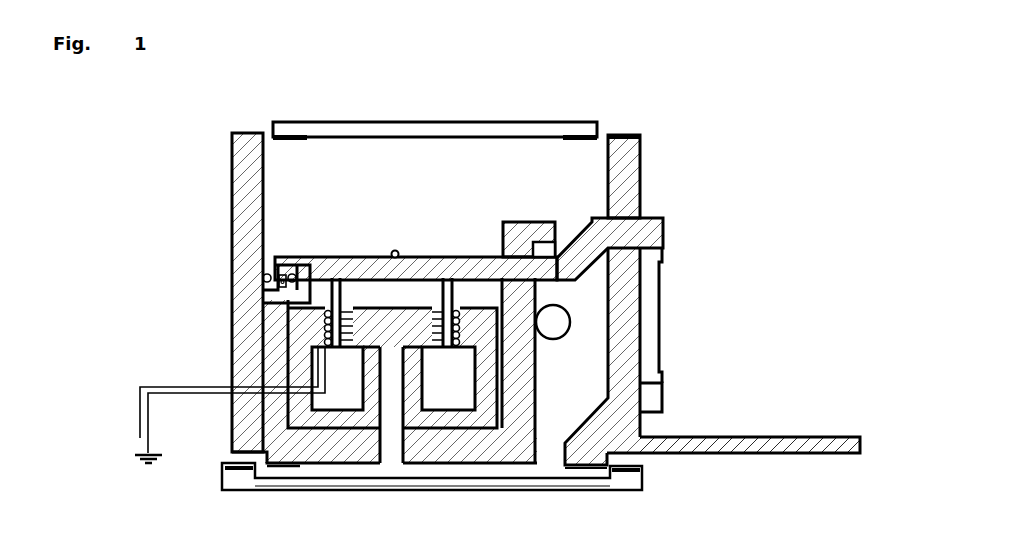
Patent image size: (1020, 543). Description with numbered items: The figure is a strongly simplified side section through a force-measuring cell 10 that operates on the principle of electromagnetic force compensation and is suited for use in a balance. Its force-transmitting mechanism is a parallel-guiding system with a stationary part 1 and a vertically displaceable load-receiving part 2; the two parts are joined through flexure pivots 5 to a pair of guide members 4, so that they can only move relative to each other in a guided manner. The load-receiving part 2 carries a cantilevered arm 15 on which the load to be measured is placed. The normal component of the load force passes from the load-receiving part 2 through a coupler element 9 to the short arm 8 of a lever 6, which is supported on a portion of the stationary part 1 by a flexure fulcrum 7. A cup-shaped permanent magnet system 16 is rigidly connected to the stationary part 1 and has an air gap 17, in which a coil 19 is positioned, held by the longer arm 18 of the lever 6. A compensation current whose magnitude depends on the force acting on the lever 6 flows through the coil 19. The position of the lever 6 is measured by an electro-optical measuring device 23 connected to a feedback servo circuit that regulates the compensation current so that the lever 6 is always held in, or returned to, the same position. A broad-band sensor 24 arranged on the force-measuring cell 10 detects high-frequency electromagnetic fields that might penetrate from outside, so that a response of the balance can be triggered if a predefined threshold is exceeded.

The stationary part 1 is at (243, 182).
The load-receiving part 2 is at (635, 165).
The guide members 4 is at (400, 132).
The flexure pivots 5 is at (267, 130).
The lever 6 is at (458, 253).
The flexure fulcrum 7 is at (558, 248).
The short arm 8 is at (643, 230).
The coupler element 9 is at (663, 283).
The force-measuring cell 10 is at (204, 92).
The cantilevered arm 15 is at (730, 436).
The permanent magnet system 16 is at (455, 420).
The air gap 17 is at (466, 317).
The longer arm 18 is at (410, 253).
The coil 19 is at (466, 325).
The electro-optical measuring device 23 is at (300, 290).
The broad-band sensor 24 is at (565, 321).